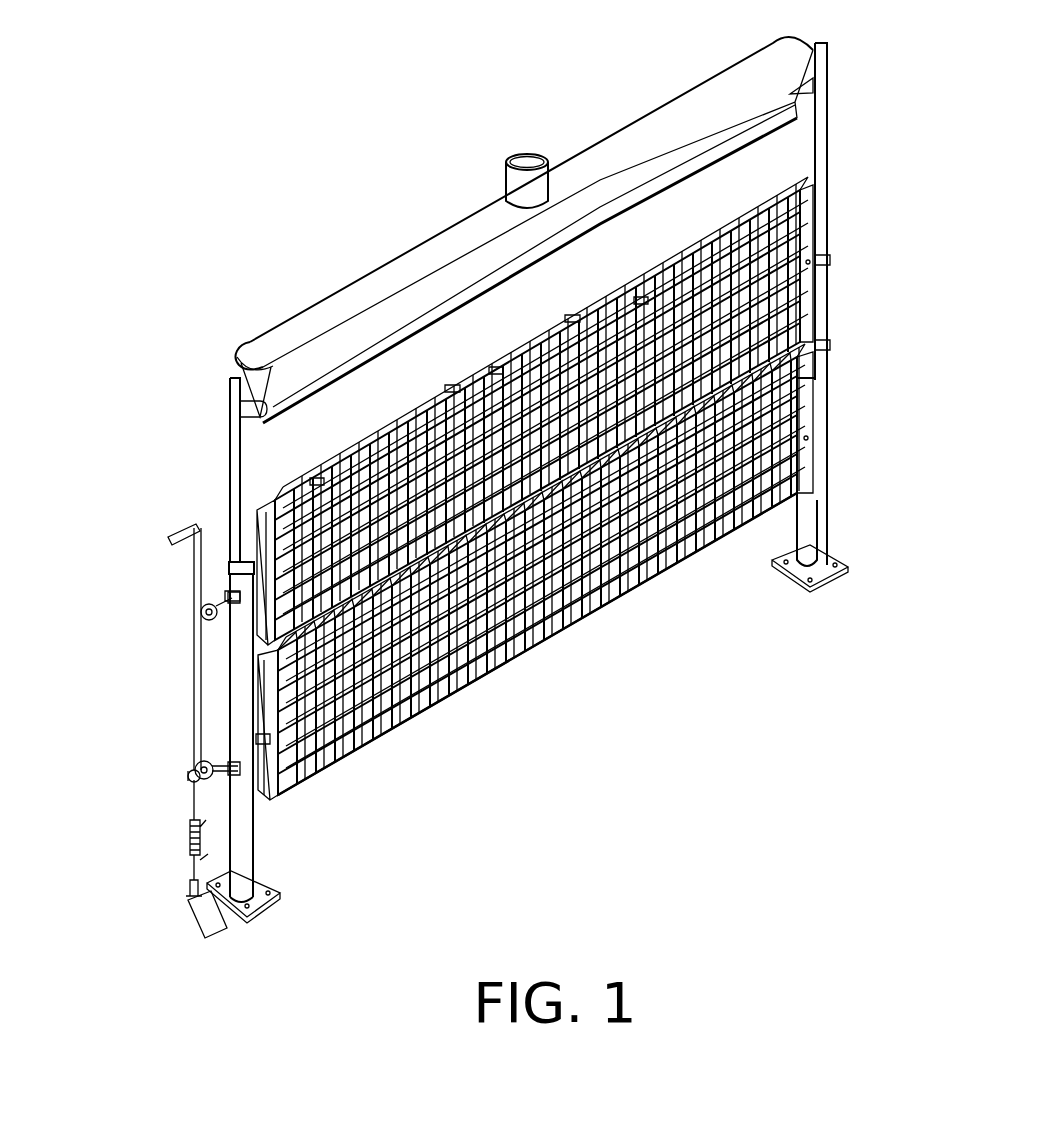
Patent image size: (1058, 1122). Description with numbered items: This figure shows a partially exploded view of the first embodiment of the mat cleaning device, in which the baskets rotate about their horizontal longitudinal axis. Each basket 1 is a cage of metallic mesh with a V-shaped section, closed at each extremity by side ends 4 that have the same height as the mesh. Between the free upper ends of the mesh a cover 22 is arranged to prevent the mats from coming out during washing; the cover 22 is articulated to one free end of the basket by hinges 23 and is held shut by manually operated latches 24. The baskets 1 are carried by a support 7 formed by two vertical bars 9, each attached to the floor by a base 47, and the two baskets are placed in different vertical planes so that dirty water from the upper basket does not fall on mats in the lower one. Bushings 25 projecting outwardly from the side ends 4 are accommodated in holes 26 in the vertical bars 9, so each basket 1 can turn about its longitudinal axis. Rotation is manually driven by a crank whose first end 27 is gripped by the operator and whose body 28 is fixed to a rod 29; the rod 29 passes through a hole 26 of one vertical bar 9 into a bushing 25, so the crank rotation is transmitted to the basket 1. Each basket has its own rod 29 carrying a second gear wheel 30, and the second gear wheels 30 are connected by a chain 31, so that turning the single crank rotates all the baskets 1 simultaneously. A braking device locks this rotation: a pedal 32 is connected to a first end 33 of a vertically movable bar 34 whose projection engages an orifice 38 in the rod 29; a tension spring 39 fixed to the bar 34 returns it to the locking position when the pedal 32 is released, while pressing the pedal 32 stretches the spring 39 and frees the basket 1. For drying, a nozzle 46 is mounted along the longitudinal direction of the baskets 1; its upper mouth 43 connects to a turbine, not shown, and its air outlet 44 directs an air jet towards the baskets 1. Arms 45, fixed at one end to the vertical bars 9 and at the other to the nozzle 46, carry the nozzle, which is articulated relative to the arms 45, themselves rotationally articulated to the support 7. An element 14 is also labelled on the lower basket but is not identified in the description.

The basket 1 is at (778, 196).
The side ends 4 is at (264, 530).
The support 7 is at (824, 340).
The vertical bars 9 is at (812, 513).
The bottom rail 14 is at (292, 787).
The cover 22 is at (374, 470).
The hinges 23 is at (318, 478).
The latches 24 is at (452, 385).
The bushings 25 is at (263, 520).
The holes 26 is at (231, 595).
The crank first end 27 is at (182, 535).
The crank body 28 is at (193, 577).
The rod 29 is at (200, 560).
The second gear wheels 30 is at (201, 620).
The chain 31 is at (192, 667).
The pedal 32 is at (192, 922).
The first end of bar 33 is at (236, 771).
The bar 34 is at (189, 894).
The orifice 38 is at (190, 779).
The tension spring 39 is at (189, 845).
The upper mouth 43 is at (530, 160).
The air outlet 44 is at (420, 346).
The arms 45 is at (827, 112).
The nozzle 46 is at (646, 135).
The base 47 is at (263, 895).